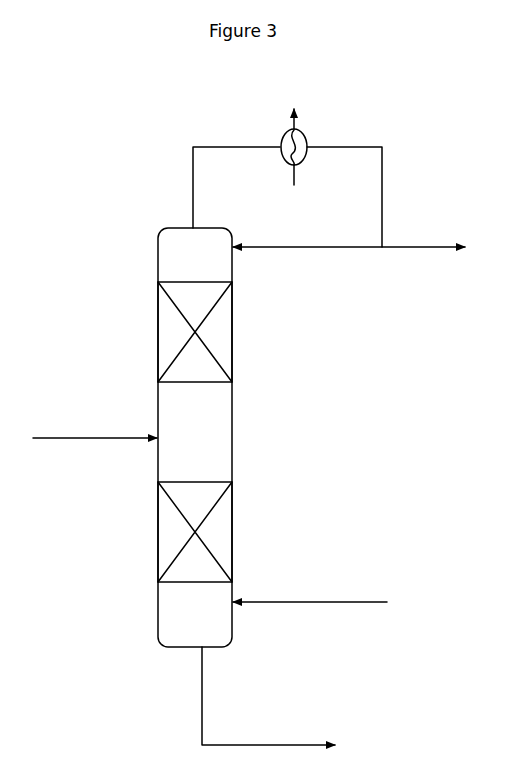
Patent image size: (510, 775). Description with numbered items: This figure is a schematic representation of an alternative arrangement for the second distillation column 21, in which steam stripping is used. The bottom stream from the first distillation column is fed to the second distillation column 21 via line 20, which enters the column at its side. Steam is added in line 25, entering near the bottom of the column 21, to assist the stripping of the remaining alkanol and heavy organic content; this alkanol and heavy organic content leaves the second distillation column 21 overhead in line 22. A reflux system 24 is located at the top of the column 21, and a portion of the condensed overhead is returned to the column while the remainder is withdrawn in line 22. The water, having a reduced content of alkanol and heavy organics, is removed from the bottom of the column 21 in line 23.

The line 20 is at (95, 458).
The second distillation column 21 is at (222, 437).
The line 22 is at (330, 205).
The line 23 is at (290, 701).
The reflux system 24 is at (216, 332).
The line 25 is at (335, 602).